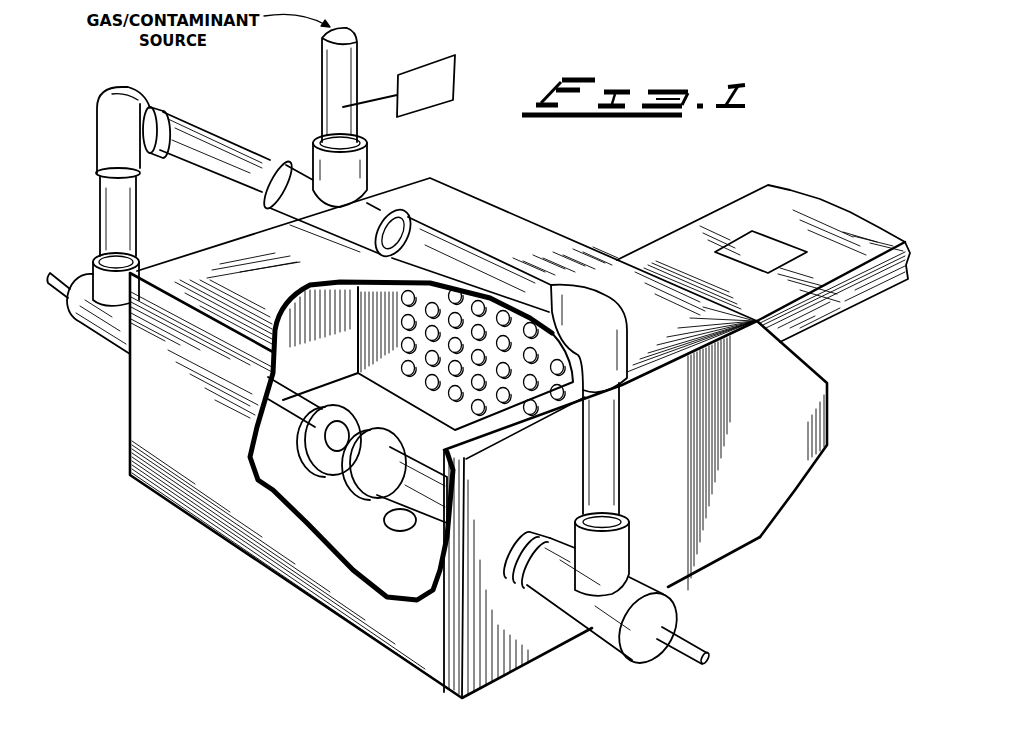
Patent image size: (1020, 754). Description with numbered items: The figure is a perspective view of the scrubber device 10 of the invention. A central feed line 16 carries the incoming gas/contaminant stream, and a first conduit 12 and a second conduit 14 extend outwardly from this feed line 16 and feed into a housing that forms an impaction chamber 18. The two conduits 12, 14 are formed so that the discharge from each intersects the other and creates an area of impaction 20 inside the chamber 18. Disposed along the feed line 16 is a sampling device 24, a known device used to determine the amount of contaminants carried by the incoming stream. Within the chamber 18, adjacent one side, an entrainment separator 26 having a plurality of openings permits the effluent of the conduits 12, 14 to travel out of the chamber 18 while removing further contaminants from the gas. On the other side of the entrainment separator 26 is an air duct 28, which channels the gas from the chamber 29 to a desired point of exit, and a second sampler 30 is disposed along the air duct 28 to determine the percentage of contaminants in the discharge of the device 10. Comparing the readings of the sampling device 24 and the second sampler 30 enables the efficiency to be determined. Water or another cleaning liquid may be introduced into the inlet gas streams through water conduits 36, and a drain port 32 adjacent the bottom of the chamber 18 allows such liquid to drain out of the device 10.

The scrubber device 10 is at (206, 589).
The first conduit 12 is at (110, 210).
The second conduit 14 is at (604, 483).
The central feed line 16 is at (323, 93).
The impaction chamber 18 is at (200, 437).
The area of impaction 20 is at (342, 478).
The sampling device 24 is at (420, 97).
The entrainment separator 26 is at (353, 291).
The air duct 28 is at (838, 320).
The chamber 29 is at (770, 480).
The second sampler 30 is at (760, 249).
The drain port 32 is at (400, 531).
The water conduits 36 is at (58, 290).